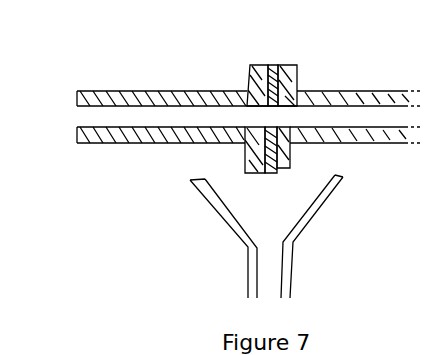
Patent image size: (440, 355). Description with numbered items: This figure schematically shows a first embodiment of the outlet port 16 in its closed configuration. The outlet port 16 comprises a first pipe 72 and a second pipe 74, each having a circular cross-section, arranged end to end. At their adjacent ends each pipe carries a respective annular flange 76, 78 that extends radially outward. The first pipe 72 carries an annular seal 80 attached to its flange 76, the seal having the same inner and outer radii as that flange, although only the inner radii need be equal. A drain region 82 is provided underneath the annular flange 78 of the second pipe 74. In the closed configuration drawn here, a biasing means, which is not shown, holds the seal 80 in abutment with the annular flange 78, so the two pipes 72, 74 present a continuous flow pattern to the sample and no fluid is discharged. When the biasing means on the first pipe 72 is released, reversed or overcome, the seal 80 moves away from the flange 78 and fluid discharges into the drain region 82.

The outlet port 16 is at (150, 46).
The first pipe 72 is at (137, 90).
The second pipe 74 is at (337, 92).
The annular flange 76 is at (249, 71).
The annular flange 78 is at (298, 88).
The annular seal 80 is at (273, 64).
The drain region 82 is at (232, 231).